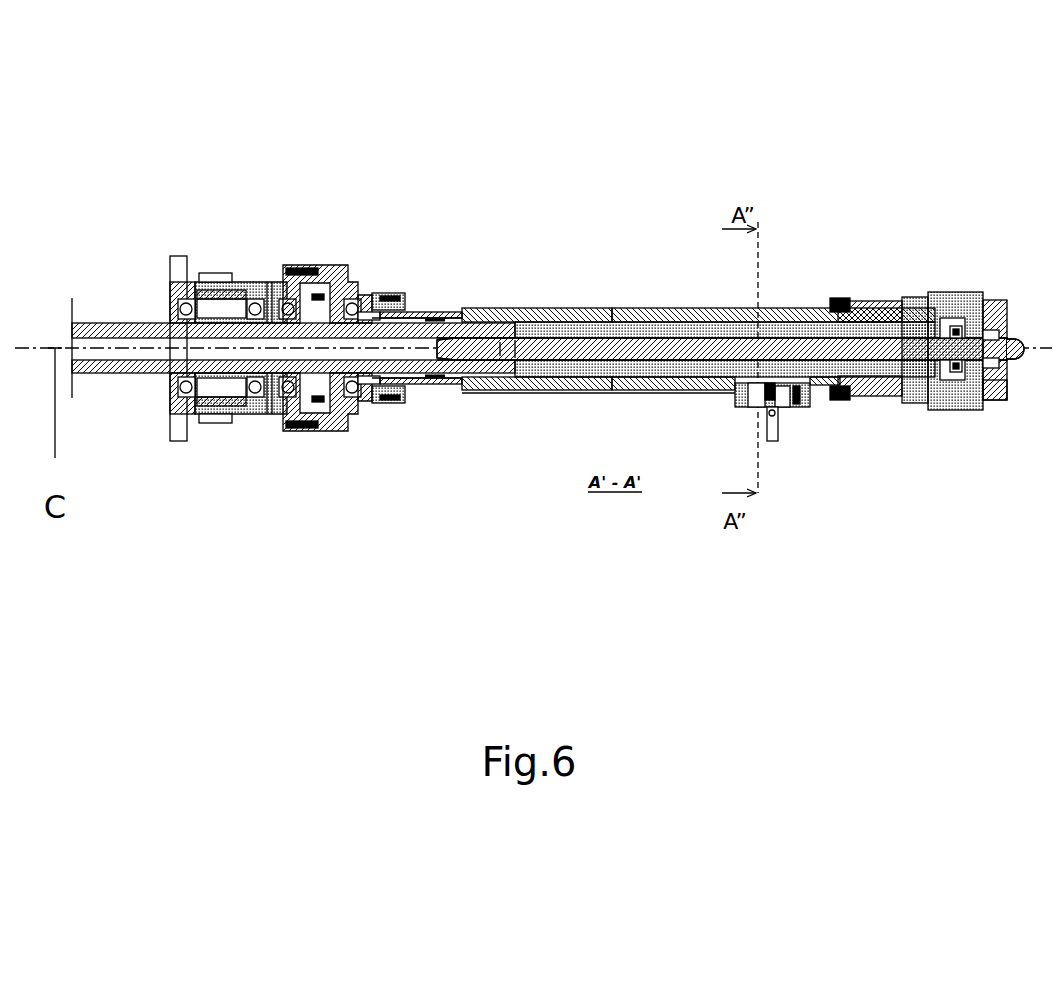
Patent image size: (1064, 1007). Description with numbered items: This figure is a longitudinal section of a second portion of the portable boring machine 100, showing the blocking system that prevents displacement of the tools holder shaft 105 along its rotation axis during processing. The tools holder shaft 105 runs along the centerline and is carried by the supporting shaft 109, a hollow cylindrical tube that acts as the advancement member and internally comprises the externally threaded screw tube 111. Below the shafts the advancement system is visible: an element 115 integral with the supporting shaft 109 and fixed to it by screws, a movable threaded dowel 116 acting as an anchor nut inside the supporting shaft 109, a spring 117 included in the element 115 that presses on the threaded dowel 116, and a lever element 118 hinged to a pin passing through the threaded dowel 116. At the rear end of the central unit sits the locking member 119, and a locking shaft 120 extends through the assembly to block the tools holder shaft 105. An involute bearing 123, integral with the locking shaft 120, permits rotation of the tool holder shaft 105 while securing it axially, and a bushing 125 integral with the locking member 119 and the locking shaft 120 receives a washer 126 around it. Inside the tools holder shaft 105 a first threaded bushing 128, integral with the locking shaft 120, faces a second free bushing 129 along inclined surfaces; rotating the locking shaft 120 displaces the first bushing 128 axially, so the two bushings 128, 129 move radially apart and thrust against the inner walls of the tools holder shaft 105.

The portable boring machine 100 is at (165, 147).
The tools holder shaft 105 is at (122, 365).
The supporting shaft 109 is at (490, 315).
The screw tube 111 is at (540, 311).
The element 115 is at (735, 390).
The movable threaded dowel 116 is at (780, 404).
The spring 117 is at (799, 401).
The lever element 118 is at (778, 418).
The locking member 119 is at (993, 400).
The locking shaft 120 is at (623, 352).
The involute bearing 123 is at (958, 328).
The bushing 125 is at (990, 300).
The washer 126 is at (1022, 333).
The first threaded bushing 128 is at (448, 355).
The second free bushing 129 is at (510, 355).